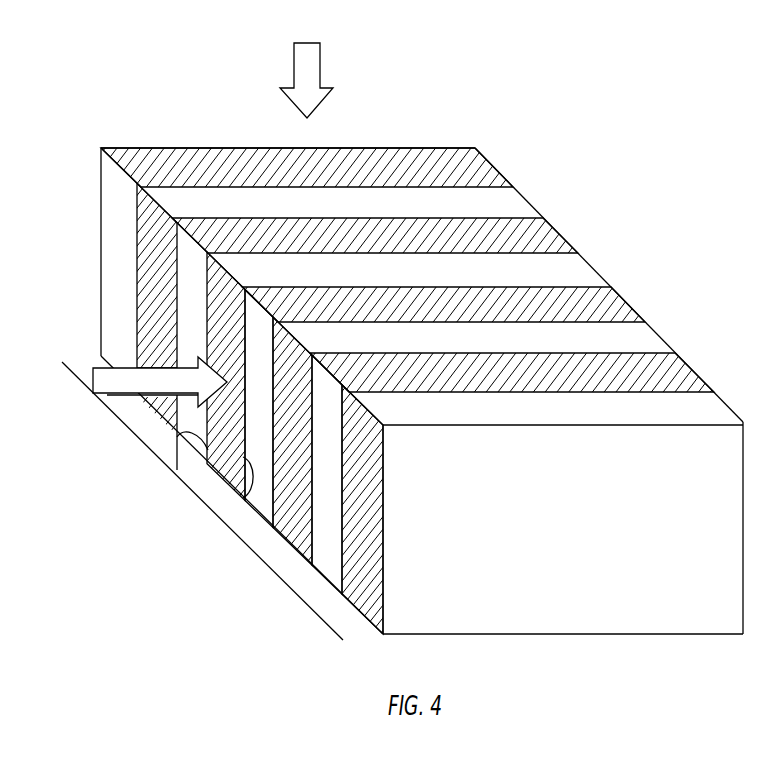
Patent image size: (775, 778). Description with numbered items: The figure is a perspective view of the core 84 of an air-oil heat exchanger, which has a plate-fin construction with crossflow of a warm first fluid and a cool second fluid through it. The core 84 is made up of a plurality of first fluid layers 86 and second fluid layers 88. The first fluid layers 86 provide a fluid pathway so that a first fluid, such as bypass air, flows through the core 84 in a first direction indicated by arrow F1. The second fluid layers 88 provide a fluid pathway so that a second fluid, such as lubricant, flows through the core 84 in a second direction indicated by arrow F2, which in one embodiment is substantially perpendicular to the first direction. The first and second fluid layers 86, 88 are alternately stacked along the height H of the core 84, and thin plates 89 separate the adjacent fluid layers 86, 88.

The core 84 is at (594, 105).
The second fluid layers 88 is at (643, 353).
The first fluid layers 86 is at (343, 547).
The thin plates 89 is at (177, 470).
The arrow F1 is at (116, 398).
The arrow F2 is at (320, 62).
The height H is at (202, 501).